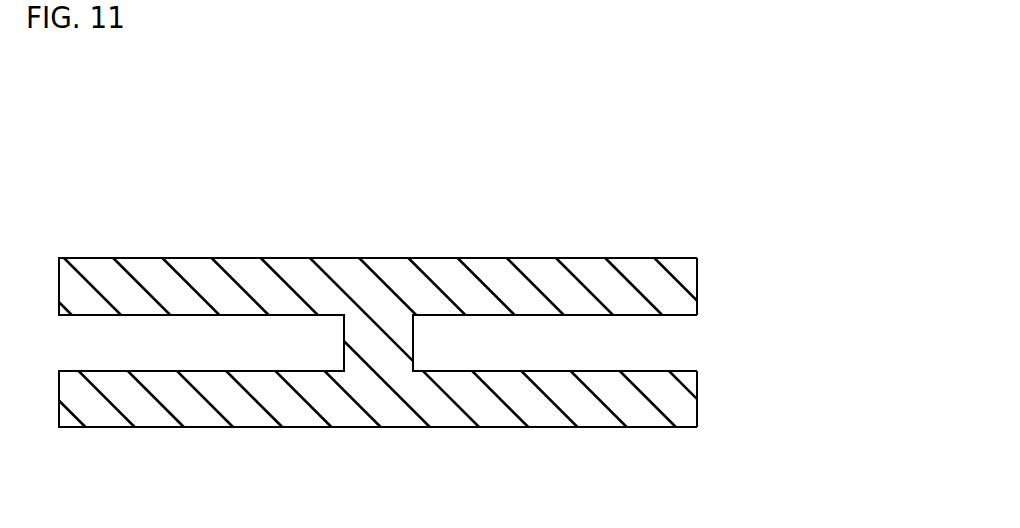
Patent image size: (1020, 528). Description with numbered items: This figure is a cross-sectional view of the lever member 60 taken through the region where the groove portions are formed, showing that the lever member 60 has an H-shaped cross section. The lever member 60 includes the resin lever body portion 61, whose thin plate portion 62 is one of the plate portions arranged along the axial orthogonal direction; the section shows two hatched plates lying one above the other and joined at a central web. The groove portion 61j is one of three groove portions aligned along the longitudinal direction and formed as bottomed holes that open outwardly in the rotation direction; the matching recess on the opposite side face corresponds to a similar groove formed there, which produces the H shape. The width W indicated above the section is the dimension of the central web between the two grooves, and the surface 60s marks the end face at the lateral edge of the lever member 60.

The lever member 60 is at (466, 255).
The lever body portion 61 is at (155, 280).
The thin plate portion 62 is at (411, 342).
The groove portion 61j is at (415, 345).
The side end surface 60s is at (698, 393).
The width of joint portion W is at (512, 192).